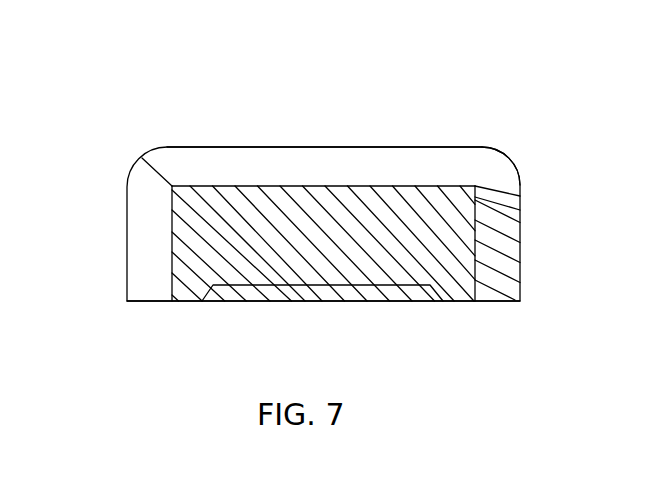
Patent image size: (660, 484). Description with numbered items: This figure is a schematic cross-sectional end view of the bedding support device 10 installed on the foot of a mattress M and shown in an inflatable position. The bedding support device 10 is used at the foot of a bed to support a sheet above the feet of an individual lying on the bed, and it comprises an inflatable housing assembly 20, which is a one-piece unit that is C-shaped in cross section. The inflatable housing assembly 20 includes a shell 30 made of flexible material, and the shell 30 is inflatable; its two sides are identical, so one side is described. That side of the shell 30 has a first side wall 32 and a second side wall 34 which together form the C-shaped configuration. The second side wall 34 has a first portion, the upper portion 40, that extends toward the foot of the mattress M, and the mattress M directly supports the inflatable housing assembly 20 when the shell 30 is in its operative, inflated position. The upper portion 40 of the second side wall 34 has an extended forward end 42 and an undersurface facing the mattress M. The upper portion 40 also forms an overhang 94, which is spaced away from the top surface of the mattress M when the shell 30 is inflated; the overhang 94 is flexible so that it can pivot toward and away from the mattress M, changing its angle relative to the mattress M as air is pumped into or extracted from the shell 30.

The bedding support device 10 is at (148, 210).
The inflatable housing assembly 20 is at (455, 148).
The shell 30 is at (195, 167).
The first side wall 32 is at (153, 258).
The second side wall 34 is at (172, 301).
The upper portion 40 is at (475, 186).
The extended forward end 42 is at (520, 200).
The overhang 94 is at (513, 182).
The mattress M is at (413, 301).